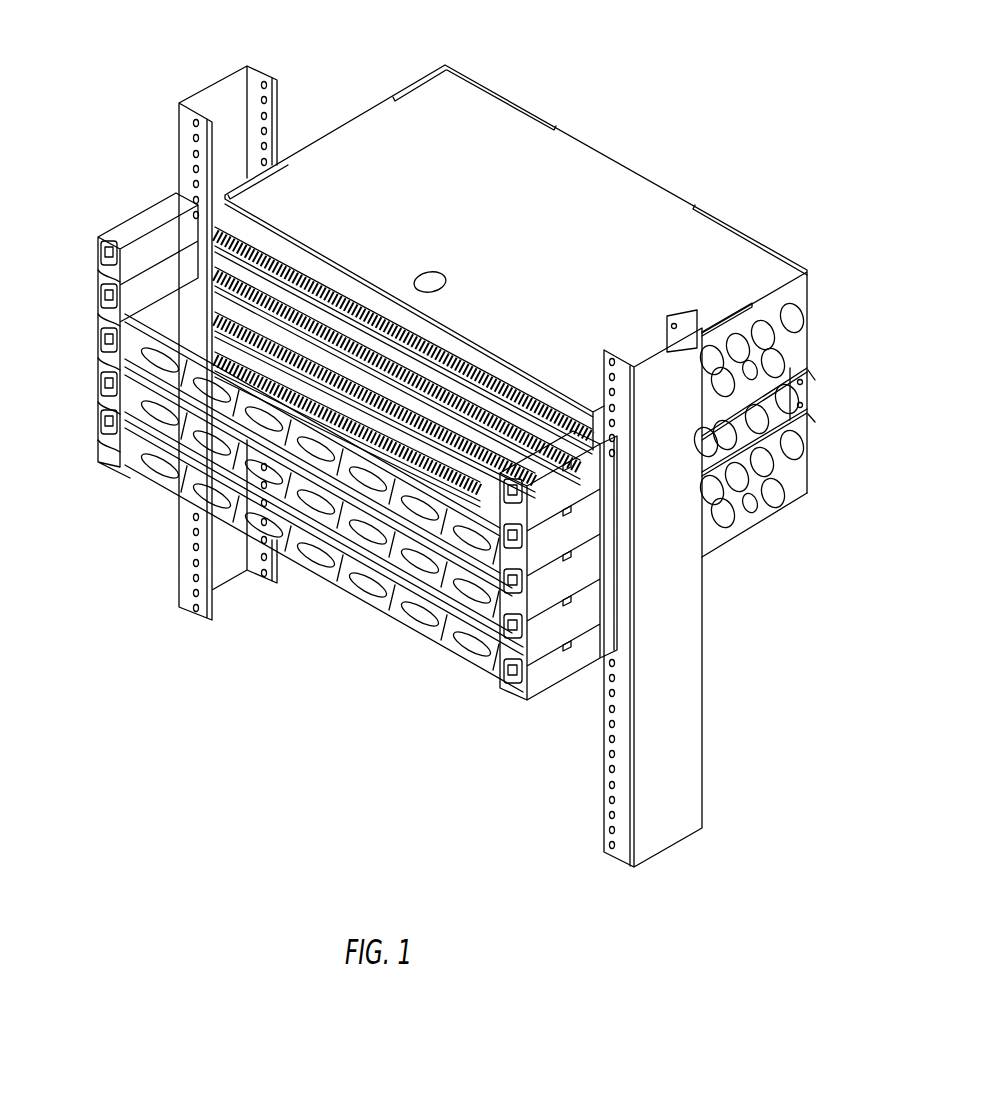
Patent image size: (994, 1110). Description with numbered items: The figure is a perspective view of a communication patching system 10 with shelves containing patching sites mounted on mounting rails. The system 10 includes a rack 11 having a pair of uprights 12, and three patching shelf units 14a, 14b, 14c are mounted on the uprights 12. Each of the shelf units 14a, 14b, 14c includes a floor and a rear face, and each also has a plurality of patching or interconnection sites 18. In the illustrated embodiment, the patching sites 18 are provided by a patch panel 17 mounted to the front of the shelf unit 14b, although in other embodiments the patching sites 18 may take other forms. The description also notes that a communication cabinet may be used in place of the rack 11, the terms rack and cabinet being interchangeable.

The communication patching system 10 is at (782, 641).
The rack 11 is at (592, 892).
The uprights 12 is at (192, 596).
The patching shelf unit 14a is at (716, 214).
The patching shelf unit 14b is at (803, 368).
The patching shelf unit 14c is at (808, 472).
The patch panel 17 is at (340, 278).
The patching sites 18 is at (260, 238).